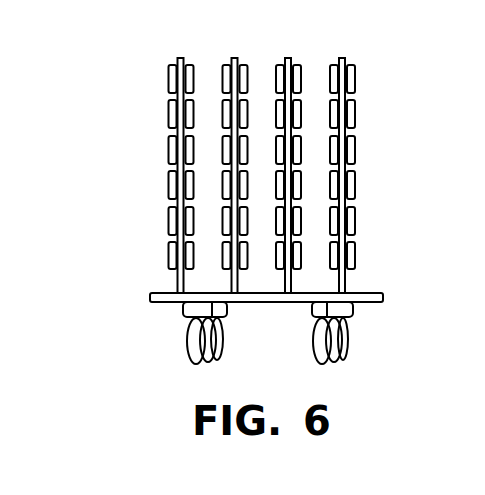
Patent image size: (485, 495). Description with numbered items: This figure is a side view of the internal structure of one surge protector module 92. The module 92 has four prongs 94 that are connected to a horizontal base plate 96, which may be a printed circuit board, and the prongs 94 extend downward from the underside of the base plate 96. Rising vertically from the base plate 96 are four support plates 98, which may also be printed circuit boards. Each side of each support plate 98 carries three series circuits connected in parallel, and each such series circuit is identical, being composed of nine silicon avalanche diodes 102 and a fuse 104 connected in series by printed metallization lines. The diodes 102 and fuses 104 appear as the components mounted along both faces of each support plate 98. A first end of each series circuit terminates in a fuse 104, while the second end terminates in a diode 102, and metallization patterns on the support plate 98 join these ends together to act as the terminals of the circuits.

The surge protector module 92 is at (128, 122).
The prong 94 is at (190, 350).
The horizontal base plate 96 is at (162, 294).
The support plate 98 is at (180, 59).
The silicon avalanche diode 102 is at (355, 121).
The fuse 104 is at (355, 83).